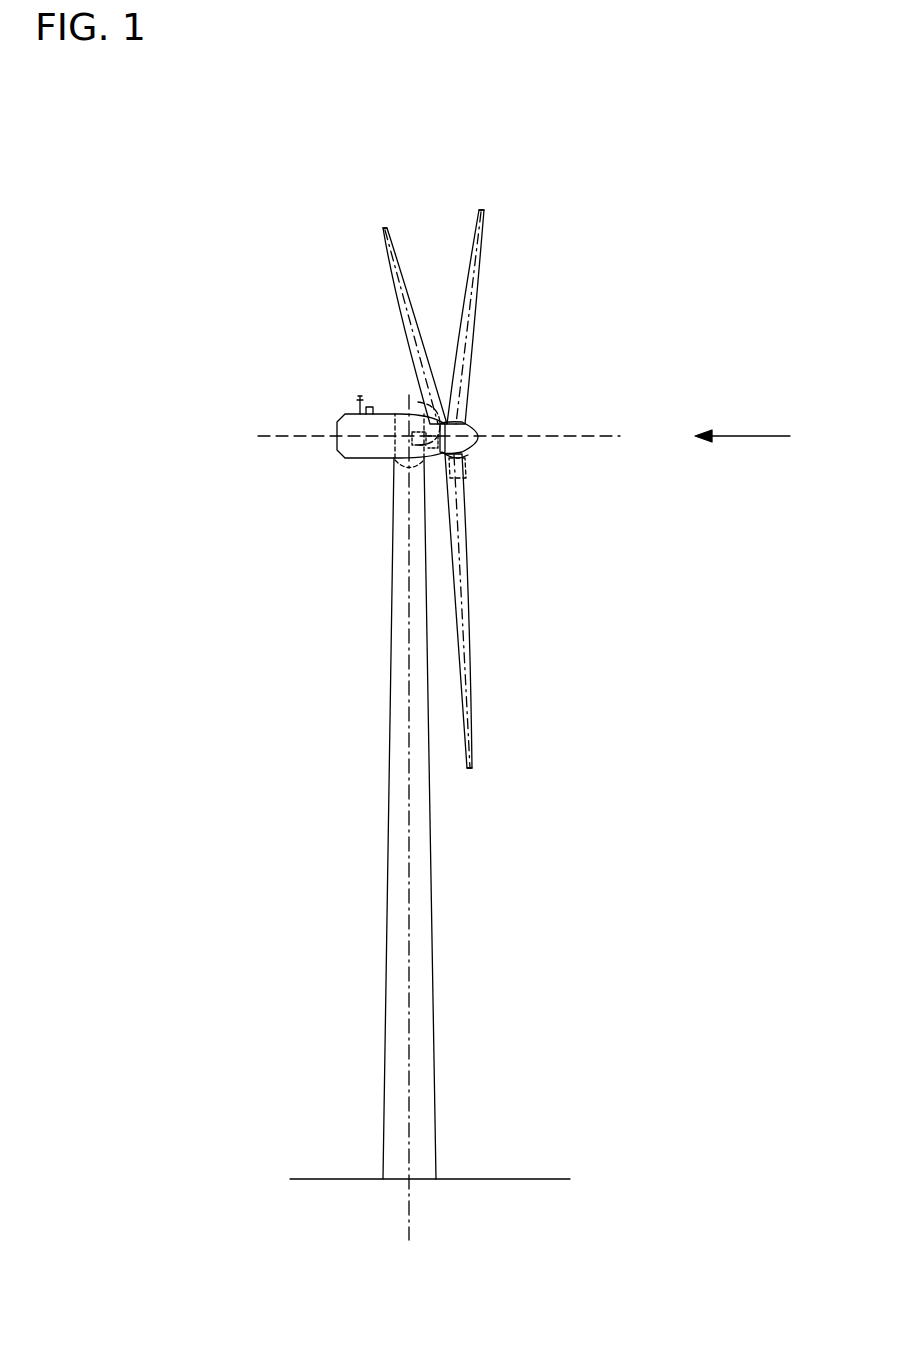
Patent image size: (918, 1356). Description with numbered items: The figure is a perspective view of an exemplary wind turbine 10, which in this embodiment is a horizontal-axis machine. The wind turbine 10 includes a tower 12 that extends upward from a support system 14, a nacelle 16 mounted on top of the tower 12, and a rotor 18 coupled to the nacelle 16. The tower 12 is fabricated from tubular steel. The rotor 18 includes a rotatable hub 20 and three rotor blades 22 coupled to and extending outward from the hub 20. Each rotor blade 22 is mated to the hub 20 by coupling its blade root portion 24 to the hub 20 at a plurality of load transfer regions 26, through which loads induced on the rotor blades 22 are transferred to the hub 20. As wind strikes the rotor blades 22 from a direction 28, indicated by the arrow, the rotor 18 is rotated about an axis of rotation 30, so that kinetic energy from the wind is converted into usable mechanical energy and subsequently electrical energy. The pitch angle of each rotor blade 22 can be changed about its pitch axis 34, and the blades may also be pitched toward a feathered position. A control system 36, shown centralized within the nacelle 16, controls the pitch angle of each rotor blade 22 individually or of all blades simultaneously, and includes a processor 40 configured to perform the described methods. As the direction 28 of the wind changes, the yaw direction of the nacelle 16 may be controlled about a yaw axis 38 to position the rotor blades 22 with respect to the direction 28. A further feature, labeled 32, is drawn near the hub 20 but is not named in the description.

The wind turbine 10 is at (185, 240).
The tower 12 is at (387, 963).
The support system 14 is at (345, 1178).
The nacelle 16 is at (372, 458).
The rotor 18 is at (485, 345).
The rotatable hub 20 is at (470, 428).
The rotor blade 22 is at (404, 293).
The blade root portion 24 is at (463, 537).
The load transfer regions 26 is at (455, 455).
The direction 28 is at (760, 436).
The axis of rotation 30 is at (540, 440).
The pitch adjustment system 32 is at (457, 485).
The pitch axes 34 is at (380, 232).
The control system 36 is at (410, 478).
The yaw axis 38 is at (410, 857).
The processor 40 is at (420, 402).